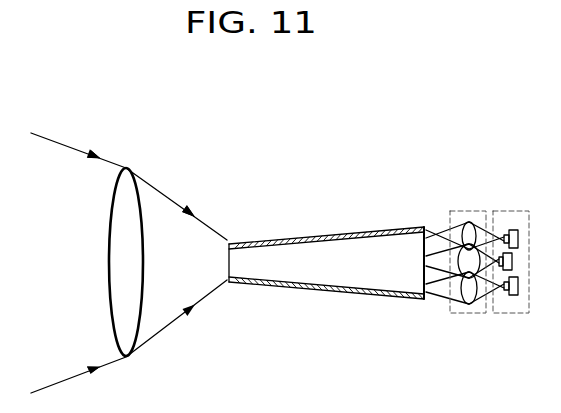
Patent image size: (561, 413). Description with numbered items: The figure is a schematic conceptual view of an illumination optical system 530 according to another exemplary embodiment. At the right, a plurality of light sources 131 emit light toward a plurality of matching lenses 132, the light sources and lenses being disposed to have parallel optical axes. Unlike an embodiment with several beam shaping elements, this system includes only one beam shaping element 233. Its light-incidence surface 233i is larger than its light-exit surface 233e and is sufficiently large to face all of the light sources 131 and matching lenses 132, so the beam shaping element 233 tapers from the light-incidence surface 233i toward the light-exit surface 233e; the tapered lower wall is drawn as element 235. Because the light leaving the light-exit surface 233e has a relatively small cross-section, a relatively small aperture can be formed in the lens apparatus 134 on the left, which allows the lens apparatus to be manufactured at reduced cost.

The lens apparatus 134 is at (126, 167).
The illumination optical system 530 is at (357, 126).
The beam shaping element 233 is at (331, 250).
The light-exit surface 233e is at (229, 249).
The light-incidence surface 233i is at (433, 237).
The reflective wall of light guide 235 is at (333, 282).
The matching lenses 132 is at (468, 314).
The light sources 131 is at (515, 314).